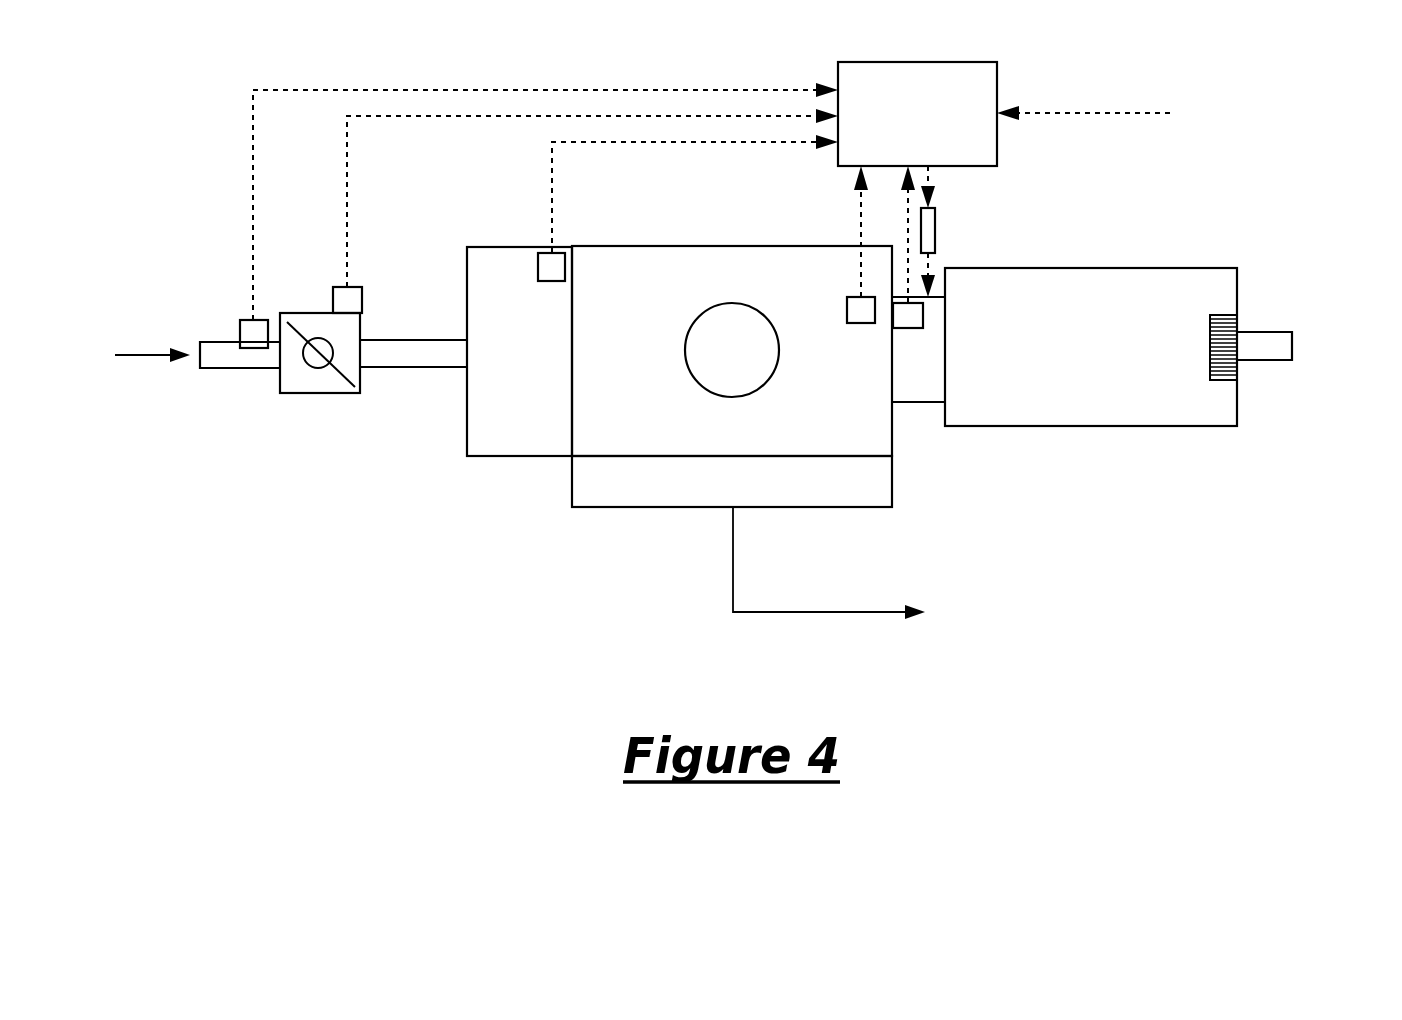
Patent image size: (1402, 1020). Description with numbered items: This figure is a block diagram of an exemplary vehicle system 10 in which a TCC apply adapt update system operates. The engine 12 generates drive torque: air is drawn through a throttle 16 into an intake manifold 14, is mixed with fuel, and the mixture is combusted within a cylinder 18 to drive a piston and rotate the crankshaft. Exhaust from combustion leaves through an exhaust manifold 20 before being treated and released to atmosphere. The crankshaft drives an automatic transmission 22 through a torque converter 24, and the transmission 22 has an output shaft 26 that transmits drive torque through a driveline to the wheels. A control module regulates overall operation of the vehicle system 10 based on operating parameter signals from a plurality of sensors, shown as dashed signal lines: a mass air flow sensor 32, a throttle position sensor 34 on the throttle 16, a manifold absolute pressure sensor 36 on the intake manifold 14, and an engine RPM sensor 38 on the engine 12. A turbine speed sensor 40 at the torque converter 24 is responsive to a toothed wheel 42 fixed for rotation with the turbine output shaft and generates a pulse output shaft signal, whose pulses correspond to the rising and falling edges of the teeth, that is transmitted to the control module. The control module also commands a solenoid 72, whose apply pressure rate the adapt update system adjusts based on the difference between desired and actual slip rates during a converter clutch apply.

The vehicle system 10 is at (430, 594).
The engine 12 is at (618, 247).
The intake manifold 14 is at (467, 425).
The throttle 16 is at (280, 385).
The cylinder 18 is at (687, 367).
The exhaust manifold 20 is at (572, 503).
The automatic transmission 22 is at (1055, 270).
The torque converter 24 is at (902, 397).
The output shaft 26 is at (1293, 345).
The mass air flow sensor 32 is at (240, 325).
The throttle position sensor 34 is at (333, 295).
The manifold absolute pressure sensor 36 is at (538, 262).
The engine RPM sensor 38 is at (853, 297).
The turbine speed sensor 40 is at (908, 330).
The toothed wheel 42 is at (1233, 383).
The solenoid 72 is at (935, 247).